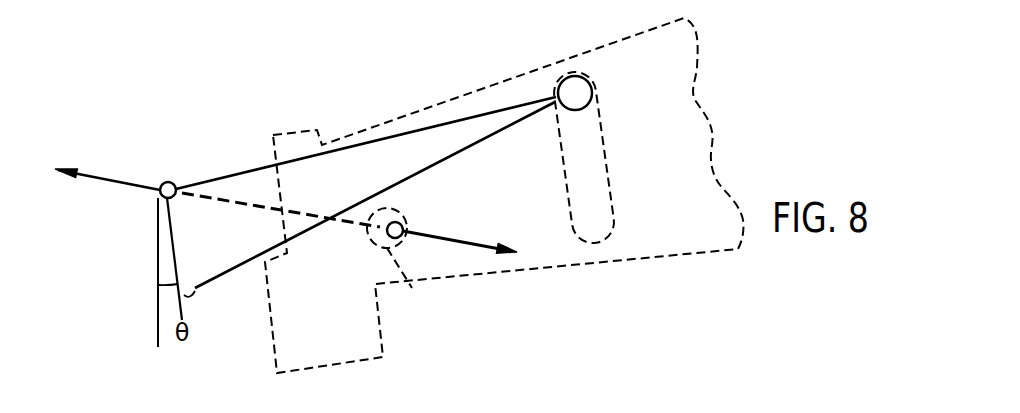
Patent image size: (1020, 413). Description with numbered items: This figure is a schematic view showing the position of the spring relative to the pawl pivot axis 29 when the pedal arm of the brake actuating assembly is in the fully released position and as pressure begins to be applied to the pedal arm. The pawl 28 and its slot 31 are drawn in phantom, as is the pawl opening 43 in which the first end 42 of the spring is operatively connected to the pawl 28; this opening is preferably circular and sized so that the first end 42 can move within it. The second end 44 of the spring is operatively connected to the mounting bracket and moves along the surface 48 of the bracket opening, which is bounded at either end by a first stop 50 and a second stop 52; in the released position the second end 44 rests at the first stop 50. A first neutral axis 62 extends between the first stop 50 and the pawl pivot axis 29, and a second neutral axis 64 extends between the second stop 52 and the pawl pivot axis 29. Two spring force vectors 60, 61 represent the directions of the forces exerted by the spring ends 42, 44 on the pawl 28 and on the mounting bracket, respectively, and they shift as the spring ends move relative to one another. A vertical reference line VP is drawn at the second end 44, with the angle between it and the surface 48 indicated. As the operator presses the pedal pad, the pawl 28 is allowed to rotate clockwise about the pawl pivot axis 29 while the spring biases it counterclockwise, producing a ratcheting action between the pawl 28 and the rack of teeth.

The pawl 28 is at (688, 233).
The pawl pivot axis 29 is at (568, 75).
The slot 31 is at (593, 243).
The first end of the spring 42 is at (393, 221).
The pawl opening 43 is at (412, 288).
The second end of the spring 44 is at (163, 183).
The surface of the opening 48 is at (169, 252).
The first stop 50 is at (183, 172).
The second stop 52 is at (186, 293).
The spring force vector 60 is at (477, 245).
The spring force vector 61 is at (100, 179).
The first neutral axis 62 is at (472, 118).
The second neutral axis 64 is at (462, 155).
The vertical plane VP is at (157, 327).